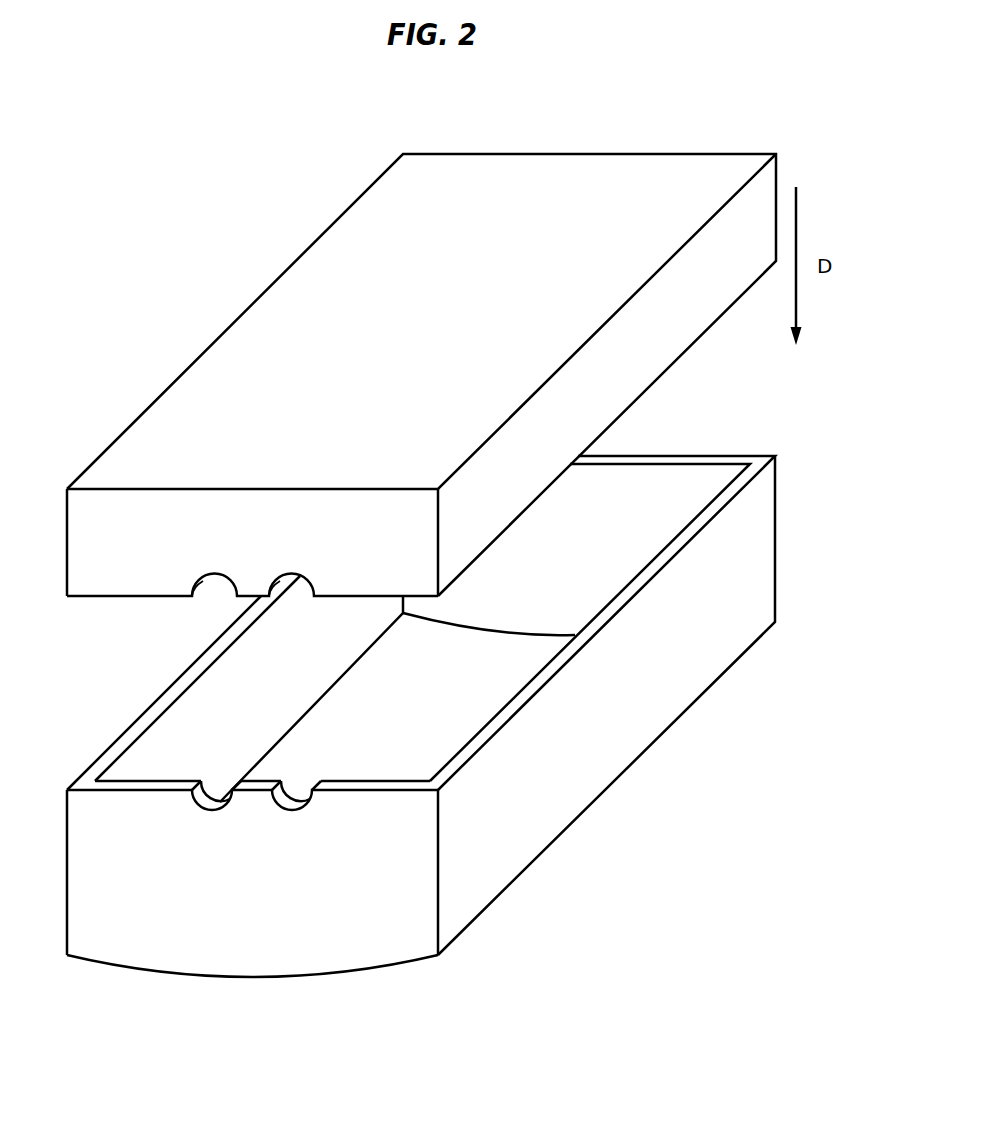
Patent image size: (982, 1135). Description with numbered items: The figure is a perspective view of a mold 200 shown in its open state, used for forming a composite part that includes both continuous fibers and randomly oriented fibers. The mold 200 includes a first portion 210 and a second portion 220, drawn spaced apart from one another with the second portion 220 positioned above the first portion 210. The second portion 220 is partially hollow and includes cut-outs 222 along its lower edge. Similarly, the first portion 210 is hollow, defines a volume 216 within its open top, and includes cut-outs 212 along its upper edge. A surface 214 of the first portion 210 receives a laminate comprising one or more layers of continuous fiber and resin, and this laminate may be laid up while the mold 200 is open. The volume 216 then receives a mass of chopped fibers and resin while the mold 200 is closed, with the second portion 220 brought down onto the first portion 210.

The mold 200 is at (652, 837).
The first portion 210 is at (777, 527).
The cut-outs 212 is at (217, 812).
The surface 214 is at (398, 701).
The volume 216 is at (512, 680).
The second portion 220 is at (428, 303).
The cut-outs 222 is at (214, 574).